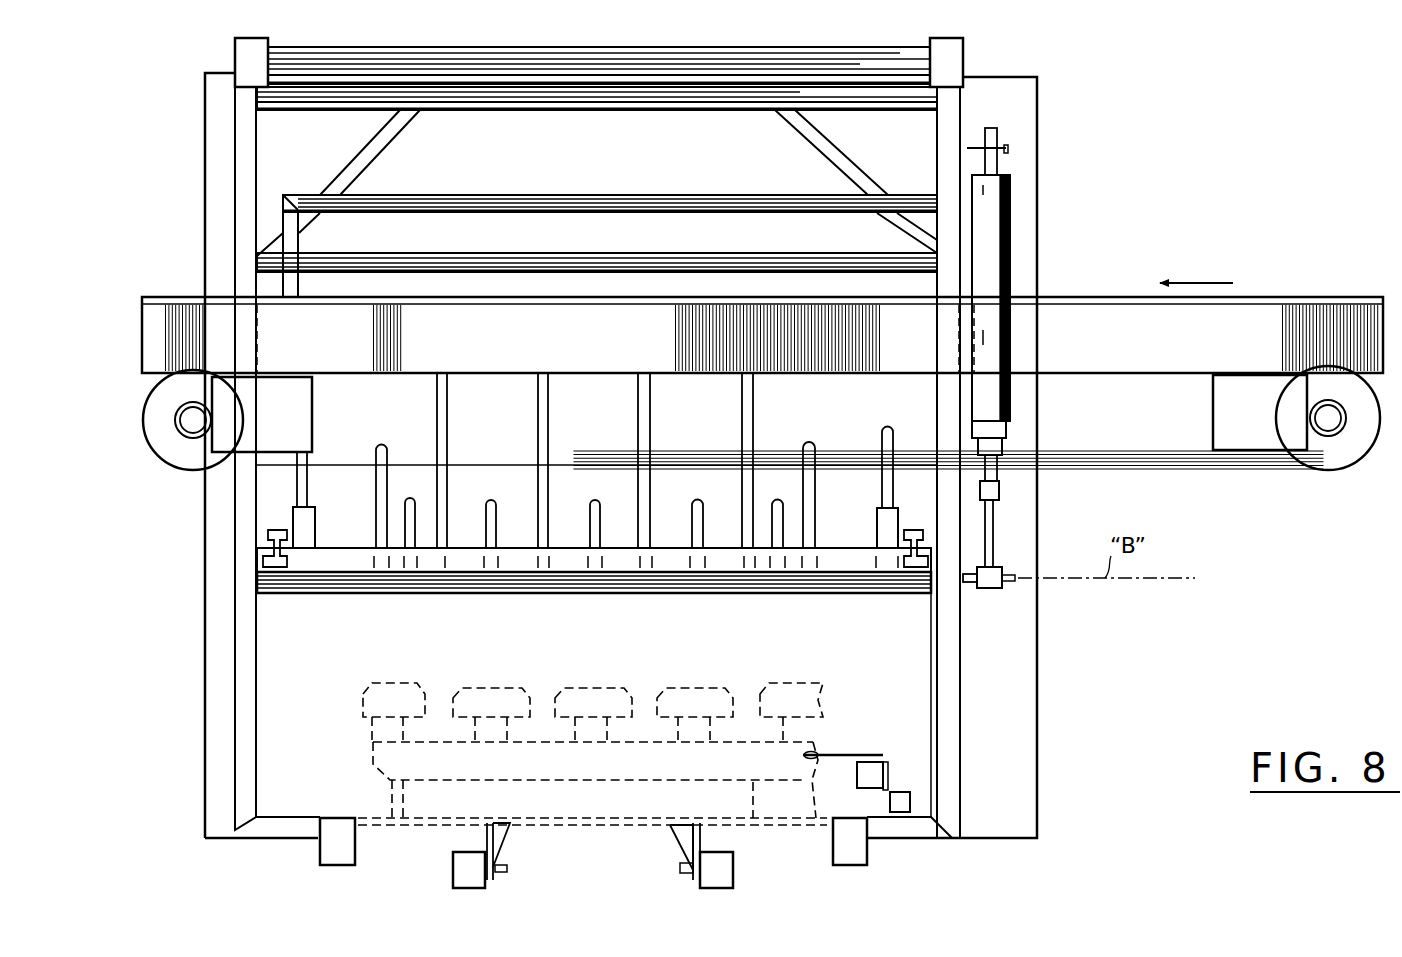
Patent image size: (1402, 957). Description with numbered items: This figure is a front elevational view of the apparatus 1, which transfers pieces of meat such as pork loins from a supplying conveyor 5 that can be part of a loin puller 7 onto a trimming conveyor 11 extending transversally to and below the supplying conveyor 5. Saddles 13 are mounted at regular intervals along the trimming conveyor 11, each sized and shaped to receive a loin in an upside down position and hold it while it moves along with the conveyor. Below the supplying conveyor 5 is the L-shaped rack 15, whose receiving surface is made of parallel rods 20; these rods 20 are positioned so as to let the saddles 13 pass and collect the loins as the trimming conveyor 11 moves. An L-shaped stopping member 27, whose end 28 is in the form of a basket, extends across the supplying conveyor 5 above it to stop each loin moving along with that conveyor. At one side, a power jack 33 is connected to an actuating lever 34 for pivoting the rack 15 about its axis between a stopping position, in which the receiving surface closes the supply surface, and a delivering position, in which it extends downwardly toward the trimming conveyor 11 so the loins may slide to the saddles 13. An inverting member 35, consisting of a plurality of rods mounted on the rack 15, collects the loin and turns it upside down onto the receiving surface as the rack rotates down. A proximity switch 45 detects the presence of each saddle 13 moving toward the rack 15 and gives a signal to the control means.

The apparatus 1 is at (168, 656).
The supplying conveyor 5 is at (1247, 297).
The loin puller 7 is at (1352, 290).
The trimming conveyor 11 is at (642, 736).
The saddles 13 is at (453, 690).
The L-shaped rack 15 is at (667, 542).
The parallel rods 20 is at (448, 498).
The L-shaped stopping member 27 is at (511, 191).
The basket-shaped end 28 is at (303, 248).
The power jack 33 is at (1012, 218).
The actuating lever 34 is at (995, 533).
The inverting member 35 is at (407, 523).
The proximity switch 45 is at (835, 753).